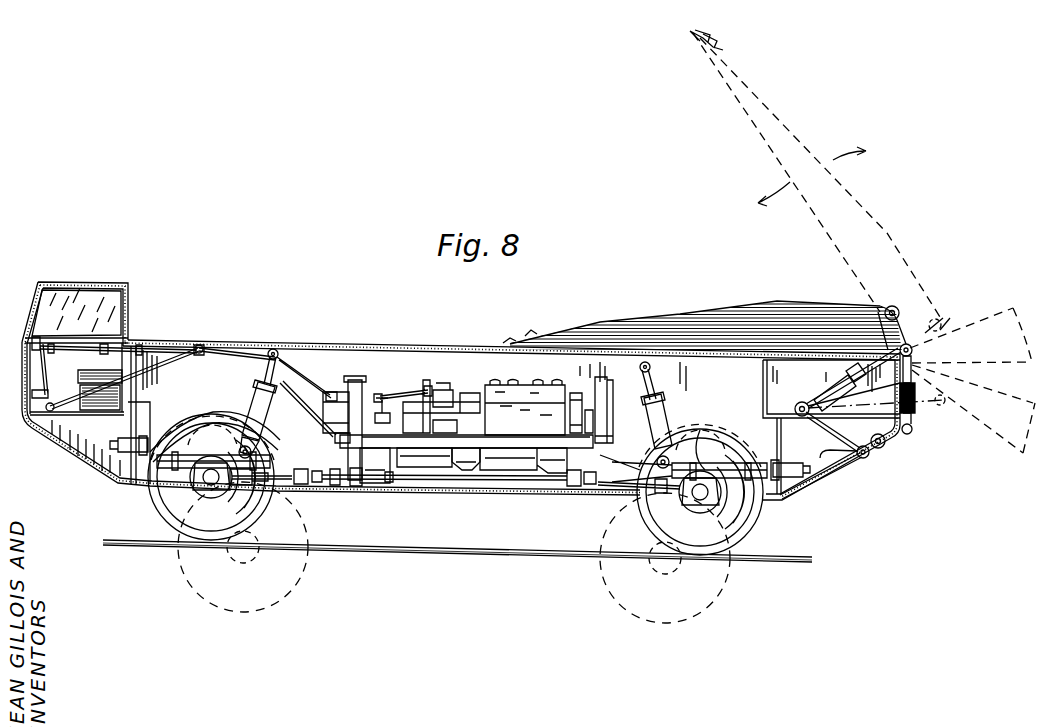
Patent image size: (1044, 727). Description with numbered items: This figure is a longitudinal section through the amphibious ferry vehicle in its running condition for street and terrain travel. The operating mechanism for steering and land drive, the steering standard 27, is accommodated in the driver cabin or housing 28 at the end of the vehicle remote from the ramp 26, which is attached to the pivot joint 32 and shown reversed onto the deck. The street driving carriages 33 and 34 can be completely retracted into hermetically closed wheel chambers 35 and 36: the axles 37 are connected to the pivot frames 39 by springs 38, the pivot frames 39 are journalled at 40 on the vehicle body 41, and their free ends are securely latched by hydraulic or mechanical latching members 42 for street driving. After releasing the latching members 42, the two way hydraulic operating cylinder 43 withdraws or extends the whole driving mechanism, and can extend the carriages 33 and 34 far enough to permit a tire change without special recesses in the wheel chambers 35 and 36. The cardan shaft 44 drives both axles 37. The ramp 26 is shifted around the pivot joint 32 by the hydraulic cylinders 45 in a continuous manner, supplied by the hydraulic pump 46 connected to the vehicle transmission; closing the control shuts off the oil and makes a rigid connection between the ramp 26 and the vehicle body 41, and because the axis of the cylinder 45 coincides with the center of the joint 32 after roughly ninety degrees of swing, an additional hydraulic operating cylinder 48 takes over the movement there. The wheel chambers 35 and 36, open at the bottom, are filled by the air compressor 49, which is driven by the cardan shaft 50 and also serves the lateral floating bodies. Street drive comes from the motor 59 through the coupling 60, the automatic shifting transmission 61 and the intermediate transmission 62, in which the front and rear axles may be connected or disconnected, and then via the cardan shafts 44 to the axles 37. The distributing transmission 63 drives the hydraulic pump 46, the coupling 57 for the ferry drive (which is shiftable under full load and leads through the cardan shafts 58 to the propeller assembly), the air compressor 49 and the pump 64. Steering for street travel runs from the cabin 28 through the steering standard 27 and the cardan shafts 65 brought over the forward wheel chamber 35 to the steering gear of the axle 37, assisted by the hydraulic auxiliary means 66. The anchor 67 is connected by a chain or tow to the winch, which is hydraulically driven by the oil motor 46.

The ramp 26 is at (707, 323).
The operating mechanism for steering 27 is at (38, 357).
The housing 28 is at (70, 280).
The joint 32 is at (930, 367).
The street driving carriage 33 is at (205, 491).
The street driving carriage 34 is at (770, 513).
The wheel chamber 35 is at (172, 373).
The wheel chamber 36 is at (745, 412).
The axle 37 is at (203, 490).
The spring 38 is at (173, 498).
The pivot frame 39 is at (195, 412).
The journal 40 is at (300, 480).
The vehicle body 41 is at (408, 363).
The latching member 42 is at (113, 432).
The two way hydraulic operating cylinder 43 is at (247, 398).
The cardan shaft 44 is at (298, 487).
The hydraulic cylinder 45 is at (817, 387).
The hydraulic pump 46 is at (333, 392).
The additional hydraulic operating cylinder 48 is at (920, 419).
The air compressor 49 is at (443, 387).
The cardan shaft 50 is at (390, 396).
The coupling 57 is at (352, 380).
The cardan shaft 58 is at (83, 349).
The motor 59 is at (520, 455).
The coupling 60 is at (460, 460).
The automatic shifting transmission 61 is at (428, 452).
The intermediate transmission 62 is at (392, 474).
The distributing transmission 63 is at (360, 440).
The pump 64 is at (381, 410).
The cardan shaft 65 is at (138, 370).
The hydraulic auxiliary means 66 is at (285, 495).
The anchor 67 is at (857, 467).